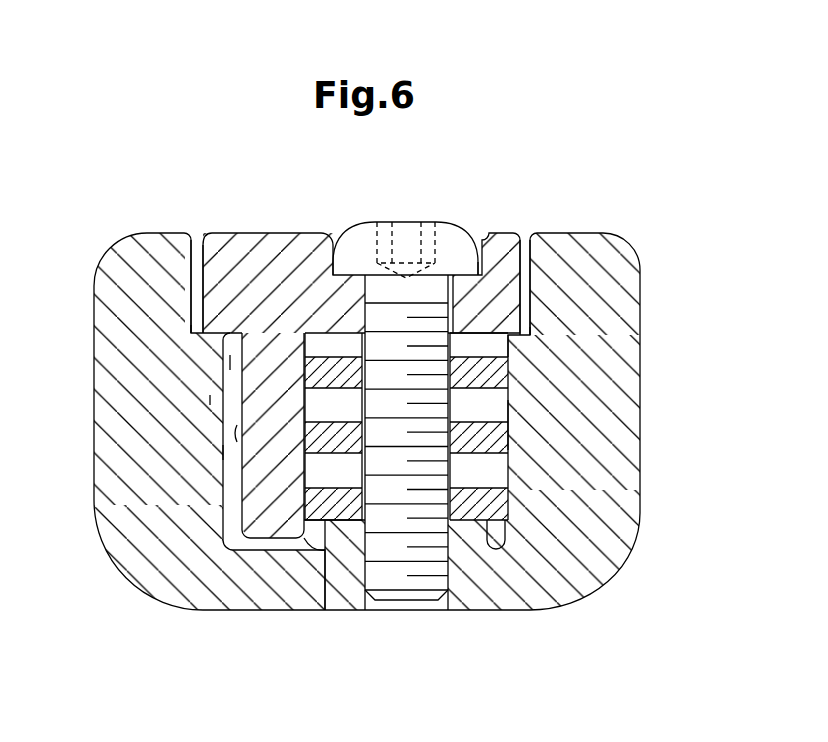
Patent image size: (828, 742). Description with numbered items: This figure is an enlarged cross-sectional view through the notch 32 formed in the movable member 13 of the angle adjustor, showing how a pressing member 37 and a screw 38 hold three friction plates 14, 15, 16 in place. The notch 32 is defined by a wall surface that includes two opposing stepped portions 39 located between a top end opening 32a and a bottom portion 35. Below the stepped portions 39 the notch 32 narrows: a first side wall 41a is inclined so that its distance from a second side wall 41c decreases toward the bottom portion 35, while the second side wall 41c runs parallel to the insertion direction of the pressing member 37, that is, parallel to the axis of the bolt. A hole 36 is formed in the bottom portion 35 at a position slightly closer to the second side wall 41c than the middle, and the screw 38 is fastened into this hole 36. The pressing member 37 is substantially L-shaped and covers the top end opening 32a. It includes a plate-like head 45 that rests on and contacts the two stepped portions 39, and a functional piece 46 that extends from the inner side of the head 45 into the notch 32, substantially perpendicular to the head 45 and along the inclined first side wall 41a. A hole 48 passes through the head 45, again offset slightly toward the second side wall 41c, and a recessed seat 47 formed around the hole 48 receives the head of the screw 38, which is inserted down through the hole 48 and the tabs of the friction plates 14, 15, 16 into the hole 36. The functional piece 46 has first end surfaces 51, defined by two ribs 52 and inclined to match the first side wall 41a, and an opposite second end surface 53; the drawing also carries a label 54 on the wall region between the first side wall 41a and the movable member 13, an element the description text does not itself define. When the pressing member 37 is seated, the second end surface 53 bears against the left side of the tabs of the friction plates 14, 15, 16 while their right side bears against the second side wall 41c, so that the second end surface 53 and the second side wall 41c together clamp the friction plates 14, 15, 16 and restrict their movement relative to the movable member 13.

The movable member 13 is at (602, 537).
The friction plate 14 is at (492, 505).
The friction plate 15 is at (468, 445).
The friction plate 16 is at (462, 378).
The notch 32 is at (508, 426).
The top end opening 32a is at (526, 260).
The bottom portion 35 is at (318, 548).
The hole 36 is at (368, 568).
The pressing member 37 is at (216, 250).
The screw 38 is at (449, 235).
The stepped portions 39 is at (207, 323).
The first side wall 41a is at (232, 435).
The second side wall 41c is at (508, 357).
The head 45 is at (260, 247).
The functional piece 46 is at (273, 502).
The recessed seat 47 is at (479, 268).
The hole 48 is at (365, 293).
The first end surfaces 51 is at (225, 450).
The ribs 52 is at (233, 362).
The second end surface 53 is at (307, 470).
The side wall 54 is at (213, 400).